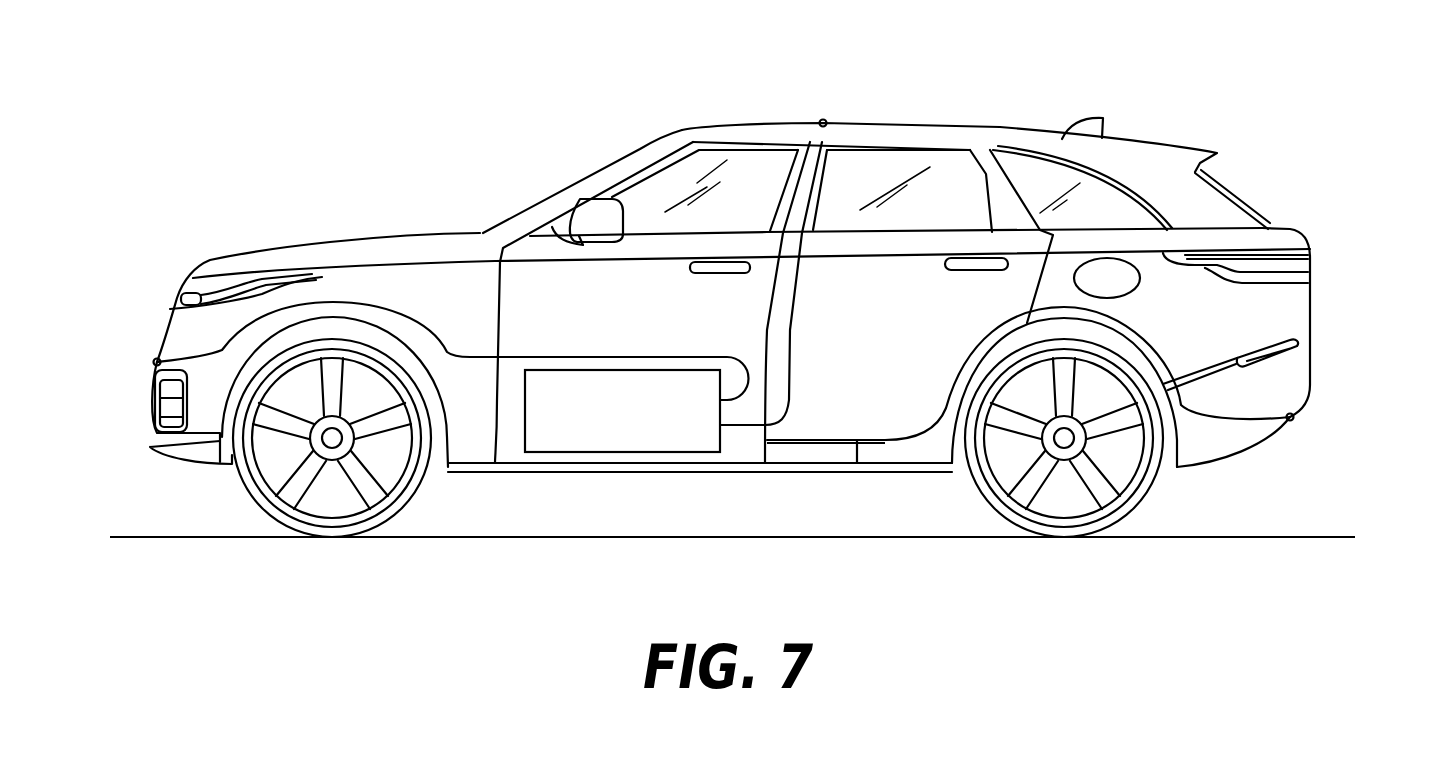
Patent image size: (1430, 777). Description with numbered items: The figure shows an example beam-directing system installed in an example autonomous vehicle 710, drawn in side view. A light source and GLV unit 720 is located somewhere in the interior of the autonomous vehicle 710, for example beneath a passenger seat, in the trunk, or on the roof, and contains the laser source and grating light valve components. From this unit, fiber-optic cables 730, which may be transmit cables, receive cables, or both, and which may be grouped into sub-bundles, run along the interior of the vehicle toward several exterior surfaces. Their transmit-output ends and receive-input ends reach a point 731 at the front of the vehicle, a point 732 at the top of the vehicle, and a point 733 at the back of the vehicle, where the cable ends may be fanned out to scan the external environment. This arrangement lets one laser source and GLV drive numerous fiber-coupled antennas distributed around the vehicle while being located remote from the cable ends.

The autonomous vehicle 710 is at (292, 245).
The light source and GLV unit 720 is at (590, 452).
The fiber-optic cables 730 is at (853, 443).
The front point 731 is at (157, 362).
The top point 732 is at (823, 123).
The back point 733 is at (1290, 417).